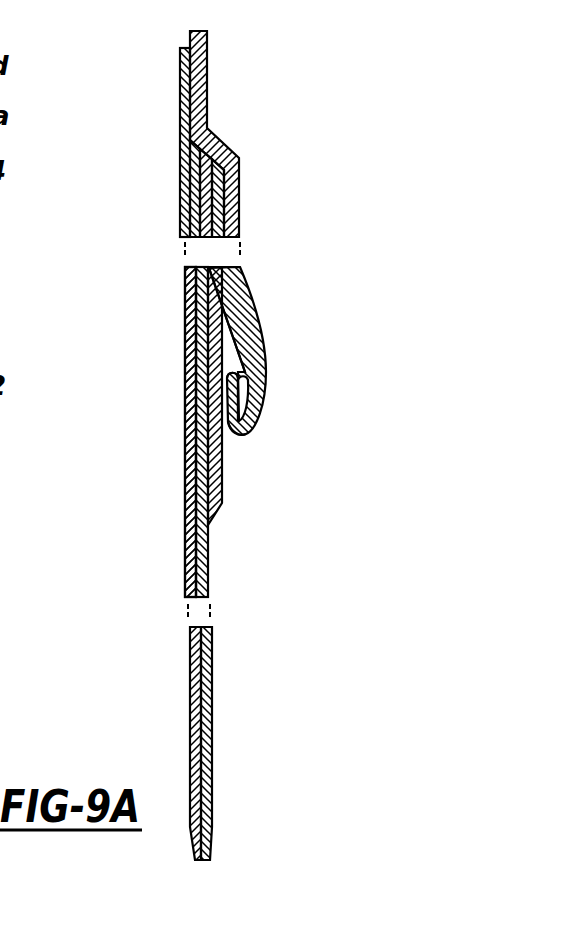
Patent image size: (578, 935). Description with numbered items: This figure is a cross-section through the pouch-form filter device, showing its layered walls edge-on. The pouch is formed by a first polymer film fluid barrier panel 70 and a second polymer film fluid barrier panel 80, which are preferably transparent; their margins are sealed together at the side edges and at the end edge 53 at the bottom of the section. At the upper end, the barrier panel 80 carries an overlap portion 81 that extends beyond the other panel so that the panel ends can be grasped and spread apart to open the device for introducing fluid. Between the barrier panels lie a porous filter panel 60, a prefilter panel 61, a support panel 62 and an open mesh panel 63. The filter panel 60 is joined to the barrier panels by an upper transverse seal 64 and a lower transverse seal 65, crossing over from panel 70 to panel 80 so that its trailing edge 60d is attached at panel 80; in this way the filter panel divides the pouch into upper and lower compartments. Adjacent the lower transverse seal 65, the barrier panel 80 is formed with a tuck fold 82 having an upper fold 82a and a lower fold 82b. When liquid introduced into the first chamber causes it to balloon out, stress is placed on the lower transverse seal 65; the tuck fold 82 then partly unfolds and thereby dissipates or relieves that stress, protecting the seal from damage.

The end edge 53 is at (208, 847).
The porous filter panel 60 is at (233, 187).
The trailing edge 60d is at (260, 368).
The prefilter panel 61 is at (233, 221).
The support panel 62 is at (207, 313).
The open mesh panel 63 is at (201, 353).
The transverse seal 64 is at (193, 156).
The lower transverse seal 65 is at (243, 356).
The first polymer film fluid barrier panel 70 is at (186, 582).
The second polymer film fluid barrier panel 80 is at (211, 524).
The overlap portion 81 is at (206, 35).
The tuck fold 82 is at (253, 433).
The upper fold 82a is at (221, 368).
The lower fold 82b is at (247, 436).